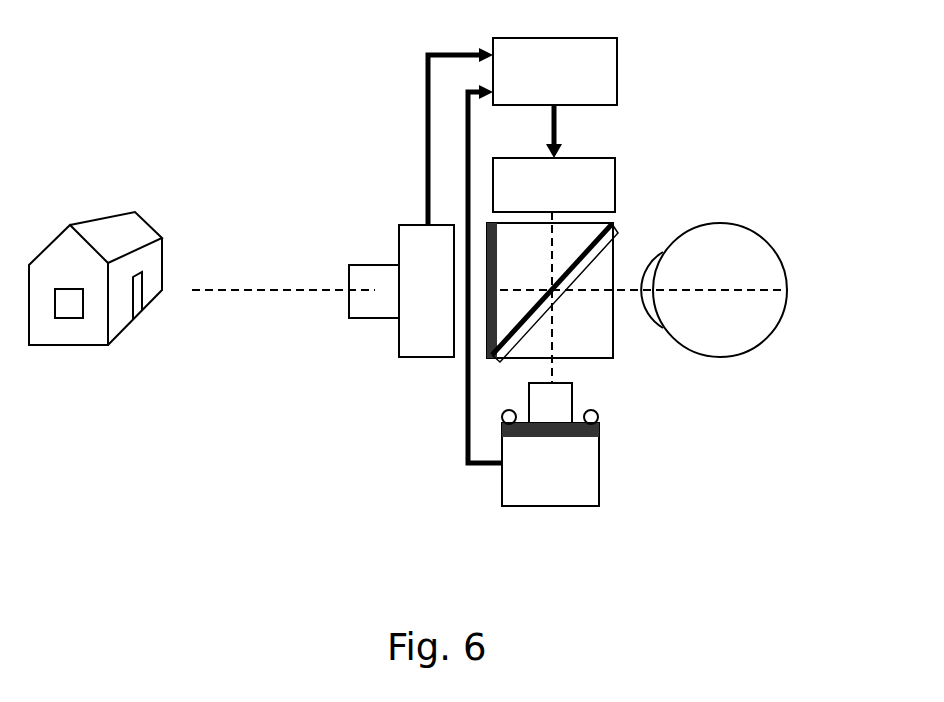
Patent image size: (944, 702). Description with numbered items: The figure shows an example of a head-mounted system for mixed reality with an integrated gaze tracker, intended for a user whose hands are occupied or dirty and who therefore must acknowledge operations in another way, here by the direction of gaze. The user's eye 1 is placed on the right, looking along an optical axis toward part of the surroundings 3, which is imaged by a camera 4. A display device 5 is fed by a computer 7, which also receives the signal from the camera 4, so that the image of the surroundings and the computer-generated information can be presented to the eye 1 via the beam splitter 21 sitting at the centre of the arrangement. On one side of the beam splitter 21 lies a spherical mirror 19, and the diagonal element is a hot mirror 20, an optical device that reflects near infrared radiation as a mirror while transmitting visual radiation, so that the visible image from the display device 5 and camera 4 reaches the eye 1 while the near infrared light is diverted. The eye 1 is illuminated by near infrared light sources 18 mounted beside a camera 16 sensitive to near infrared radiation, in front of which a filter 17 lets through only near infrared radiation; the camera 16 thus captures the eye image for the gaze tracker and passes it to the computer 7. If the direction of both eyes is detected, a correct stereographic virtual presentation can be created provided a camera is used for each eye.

The eye 1 is at (720, 359).
The part of the surroundings 3 is at (135, 347).
The camera 4 is at (387, 345).
The display device 5 is at (630, 183).
The computer 7 is at (630, 77).
The camera sensitive to near IR radiation 16 is at (613, 480).
The filter letting through only near IR radiation 17 is at (610, 435).
The near IR light sources 18 is at (493, 425).
The spherical mirror 19 is at (480, 342).
The hot mirror 20 is at (562, 302).
The beam splitter 21 is at (570, 265).